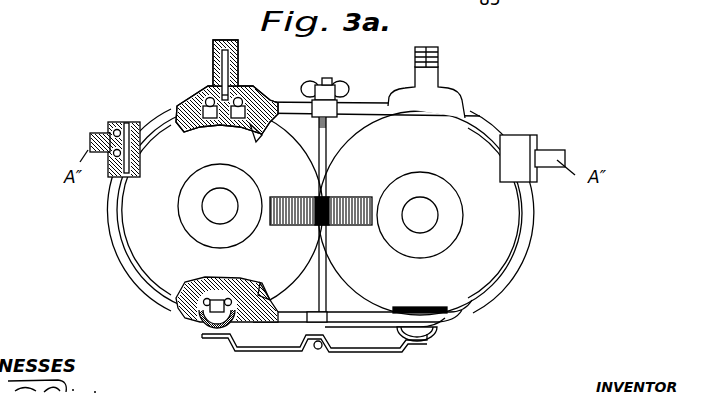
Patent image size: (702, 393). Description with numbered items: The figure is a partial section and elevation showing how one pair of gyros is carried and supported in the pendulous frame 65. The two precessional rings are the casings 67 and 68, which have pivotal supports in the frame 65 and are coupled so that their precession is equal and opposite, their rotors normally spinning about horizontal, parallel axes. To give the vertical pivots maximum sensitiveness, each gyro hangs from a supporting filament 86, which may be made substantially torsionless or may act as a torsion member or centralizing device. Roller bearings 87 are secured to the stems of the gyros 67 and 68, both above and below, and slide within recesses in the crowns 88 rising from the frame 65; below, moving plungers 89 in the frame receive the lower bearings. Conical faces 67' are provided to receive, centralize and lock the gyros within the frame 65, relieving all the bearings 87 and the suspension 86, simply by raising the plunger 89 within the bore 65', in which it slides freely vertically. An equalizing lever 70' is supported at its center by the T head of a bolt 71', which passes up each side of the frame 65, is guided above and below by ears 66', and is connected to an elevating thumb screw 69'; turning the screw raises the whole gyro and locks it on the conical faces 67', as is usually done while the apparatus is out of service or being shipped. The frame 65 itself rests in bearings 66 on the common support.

The frame 65 is at (366, 90).
The bore 65' is at (361, 307).
The bearings 66 is at (321, 217).
The ears 66' is at (334, 211).
The casing 67 is at (202, 206).
The conical faces 67' is at (258, 212).
The casing 68 is at (439, 215).
The thumb screw 69' is at (325, 73).
The equalizing lever 70' is at (314, 354).
The bolt 71' is at (302, 254).
The supporting filament 86 is at (237, 77).
The roller bearings 87 is at (196, 92).
The crowns 88 is at (435, 97).
The plungers 89 is at (200, 333).